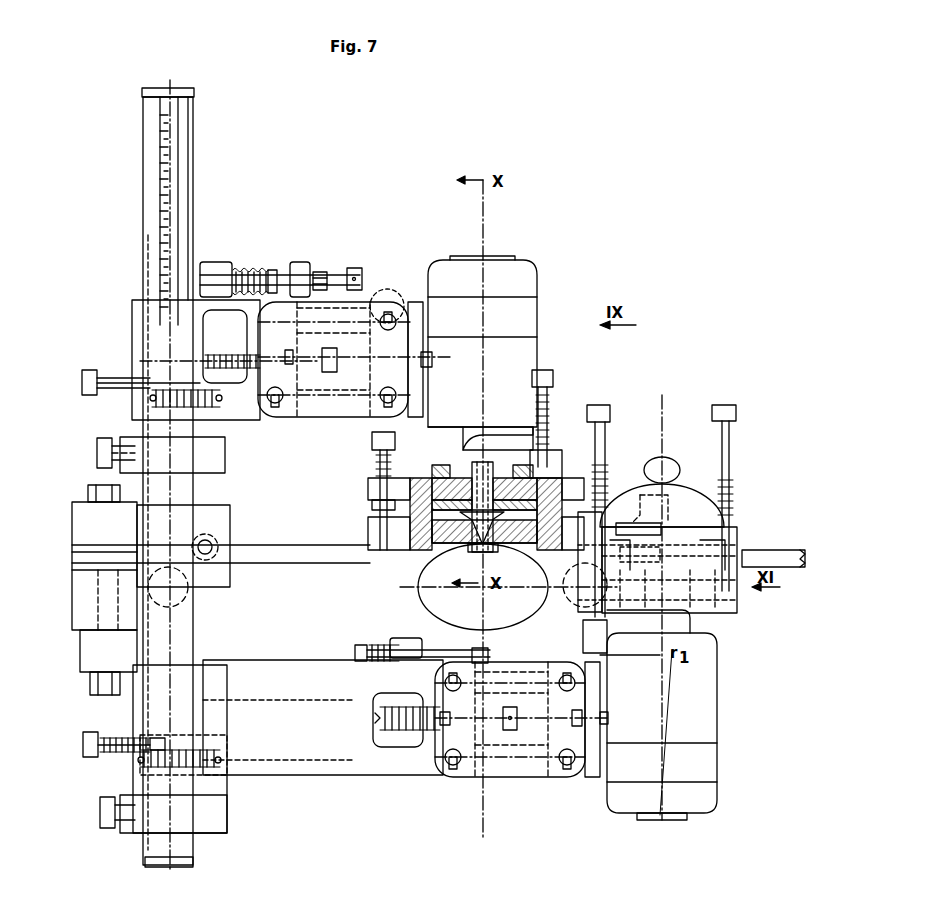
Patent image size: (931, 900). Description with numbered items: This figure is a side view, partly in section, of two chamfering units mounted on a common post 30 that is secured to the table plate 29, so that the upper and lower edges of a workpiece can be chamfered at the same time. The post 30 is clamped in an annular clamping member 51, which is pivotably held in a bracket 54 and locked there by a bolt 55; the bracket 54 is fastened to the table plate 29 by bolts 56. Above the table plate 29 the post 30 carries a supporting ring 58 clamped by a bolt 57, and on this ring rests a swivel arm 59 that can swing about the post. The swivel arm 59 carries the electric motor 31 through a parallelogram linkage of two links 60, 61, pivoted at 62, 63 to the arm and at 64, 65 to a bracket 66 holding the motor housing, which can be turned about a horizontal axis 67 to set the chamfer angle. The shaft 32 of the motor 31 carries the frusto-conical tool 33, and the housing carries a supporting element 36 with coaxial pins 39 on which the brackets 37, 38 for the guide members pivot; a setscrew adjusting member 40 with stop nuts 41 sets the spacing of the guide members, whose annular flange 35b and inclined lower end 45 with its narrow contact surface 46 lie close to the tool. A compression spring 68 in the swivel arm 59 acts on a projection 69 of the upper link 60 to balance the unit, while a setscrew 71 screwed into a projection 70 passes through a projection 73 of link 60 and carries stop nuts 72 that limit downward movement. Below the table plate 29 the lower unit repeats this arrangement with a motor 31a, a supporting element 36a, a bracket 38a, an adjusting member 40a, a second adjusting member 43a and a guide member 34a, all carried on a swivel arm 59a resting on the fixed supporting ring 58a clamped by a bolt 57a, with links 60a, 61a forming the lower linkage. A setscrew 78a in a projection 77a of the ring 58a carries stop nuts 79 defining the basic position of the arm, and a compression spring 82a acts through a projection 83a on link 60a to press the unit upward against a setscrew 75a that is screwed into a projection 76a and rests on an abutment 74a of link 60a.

The table plate 29 is at (285, 549).
The post 30 is at (142, 179).
The electric motor 31 is at (537, 277).
The motor 31a is at (703, 758).
The shaft 32 is at (483, 507).
The frusto-conical tool 33 is at (506, 537).
The guide member 34a is at (706, 572).
The annular flange 35b is at (418, 582).
The supporting element 36 is at (550, 438).
The supporting element 36a is at (583, 630).
The supporting bracket 37 is at (482, 514).
The supporting bracket 38 is at (370, 525).
The supporting bracket 38a is at (585, 563).
The coaxial pins 39 is at (425, 479).
The adjusting member 40 is at (372, 506).
The adjusting member 40a is at (730, 428).
The stop nuts 41 is at (369, 489).
The second adjusting member 43a is at (605, 430).
The lower end 45 is at (695, 551).
The contact surface 46 is at (680, 525).
The annular clamping member 51 is at (228, 508).
The bracket 54 is at (74, 507).
The bolt 55 is at (90, 489).
The bolts 56 is at (94, 695).
The bolt 57 is at (98, 453).
The bolt 57a is at (100, 828).
The supporting ring 58 is at (225, 453).
The fixed supporting ring 58a is at (137, 830).
The swivel arm 59 is at (246, 270).
The swivel arm 59a is at (290, 777).
The link 60 is at (335, 311).
The link 60a is at (536, 667).
The link 61 is at (349, 385).
The link 61a is at (493, 777).
The pivot connection 62 is at (270, 273).
The pivot connection 63 is at (281, 402).
The pivot connection 64 is at (388, 313).
The pivot connection 65 is at (383, 402).
The bracket 66 is at (400, 313).
The horizontal axis 67 is at (428, 350).
The compression spring 68 is at (206, 350).
The projection 69 is at (293, 348).
The projection 70 is at (214, 264).
The setscrew 71 is at (346, 268).
The stop nuts 72 is at (319, 272).
The projection 73 is at (298, 262).
The abutment 74a is at (491, 655).
The setscrew 75a is at (450, 647).
The projection 76a is at (402, 638).
The projection 77a is at (220, 727).
The setscrew 78a is at (108, 734).
The stop nuts 79 is at (166, 734).
The compression spring 82a is at (378, 713).
The projection 83a is at (477, 725).